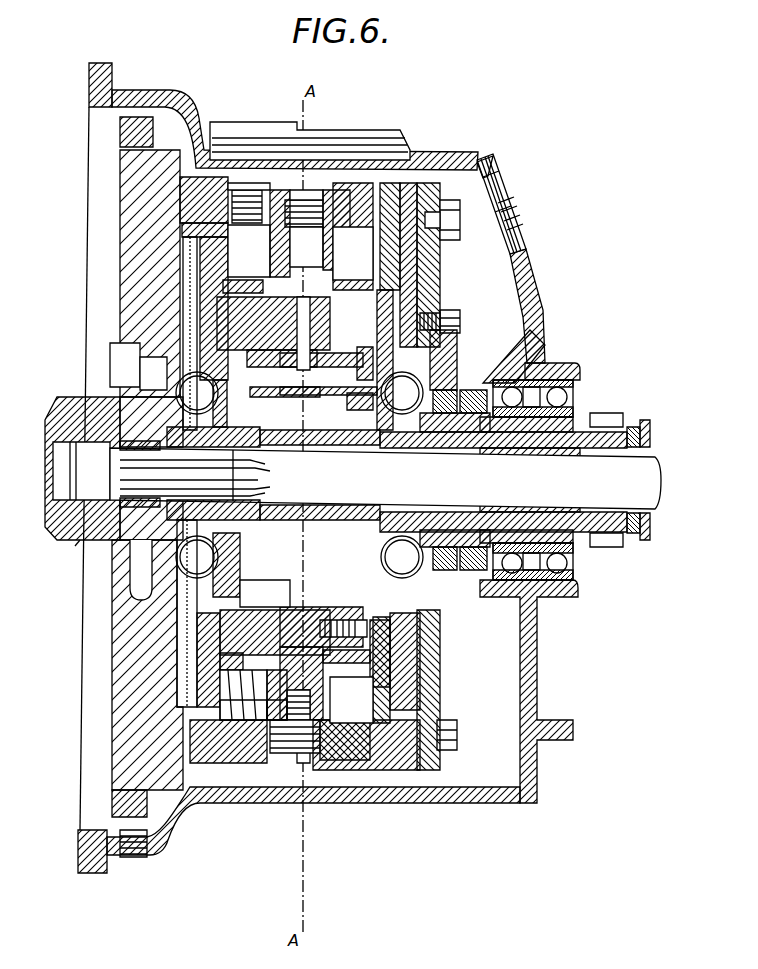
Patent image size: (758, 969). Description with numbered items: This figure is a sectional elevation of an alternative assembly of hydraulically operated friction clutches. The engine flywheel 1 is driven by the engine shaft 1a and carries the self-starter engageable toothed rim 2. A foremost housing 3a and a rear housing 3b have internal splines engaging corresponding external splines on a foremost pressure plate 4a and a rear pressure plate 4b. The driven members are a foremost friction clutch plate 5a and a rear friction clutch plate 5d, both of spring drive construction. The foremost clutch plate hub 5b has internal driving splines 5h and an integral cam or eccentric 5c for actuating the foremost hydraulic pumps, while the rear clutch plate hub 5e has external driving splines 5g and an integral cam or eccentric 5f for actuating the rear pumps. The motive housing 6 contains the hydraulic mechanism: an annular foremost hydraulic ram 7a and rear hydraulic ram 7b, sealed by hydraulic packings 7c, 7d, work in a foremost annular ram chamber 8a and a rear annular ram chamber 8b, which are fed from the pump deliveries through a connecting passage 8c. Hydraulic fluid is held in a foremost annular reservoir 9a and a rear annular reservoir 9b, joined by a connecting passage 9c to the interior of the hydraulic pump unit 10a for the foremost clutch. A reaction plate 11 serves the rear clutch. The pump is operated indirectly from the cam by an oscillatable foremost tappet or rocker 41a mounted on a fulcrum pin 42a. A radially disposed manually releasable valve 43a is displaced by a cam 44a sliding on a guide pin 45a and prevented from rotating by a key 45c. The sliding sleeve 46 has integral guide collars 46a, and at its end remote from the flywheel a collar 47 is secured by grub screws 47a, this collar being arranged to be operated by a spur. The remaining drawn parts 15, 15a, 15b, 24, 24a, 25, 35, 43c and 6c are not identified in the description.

The engine flywheel 1 is at (124, 781).
The engine shaft 1a is at (90, 407).
The self-starter engageable toothed rim 2 is at (128, 148).
The foremost housing 3a is at (140, 172).
The rear housing 3b is at (396, 245).
The foremost pressure plate 4a is at (195, 207).
The rear pressure plate 4b is at (428, 203).
The foremost friction clutch plate 5a is at (187, 217).
The foremost clutch plate hub 5b is at (200, 385).
The cam or eccentric 5c is at (180, 560).
The rear friction clutch plate 5d is at (407, 629).
The rear clutch plate hub 5e is at (547, 357).
The cam or eccentric 5f is at (347, 515).
The external driving splines 5g is at (471, 378).
The internal driving splines 5h is at (127, 362).
The motive housing 6 is at (333, 160).
The screw 6c is at (503, 201).
The foremost hydraulic ram 7a is at (207, 185).
The rear hydraulic ram 7b is at (372, 268).
The hydraulic packing 7c is at (258, 240).
The hydraulic packing 7d is at (335, 282).
The foremost annular ram chamber 8a is at (275, 250).
The rear annular ram chamber 8b is at (340, 227).
The connecting passage 8c is at (237, 778).
The foremost annular reservoir 9a is at (262, 287).
The rear annular reservoir 9b is at (390, 270).
The connecting passage 9c is at (273, 764).
The hydraulic pump unit 10a is at (307, 764).
The reaction plate 11 is at (492, 176).
The bearing retainer 15 is at (543, 350).
The retainer arm 15a is at (531, 322).
The retainer collar 15b is at (603, 412).
The input shaft 24 is at (474, 497).
The splined shaft end 24a is at (123, 453).
The hub ring 25 is at (78, 547).
The ring gear flange 35 is at (131, 91).
The foremost tappet or rocker 41a is at (244, 593).
The fulcrum pin 42a is at (222, 545).
The manually releasable valve 43a is at (300, 196).
The bolt 43c is at (447, 233).
The cam 44a is at (186, 275).
The guide pin 45a is at (192, 312).
The key 45c is at (199, 300).
The sliding sleeve 46 is at (190, 372).
The guide collar 46a is at (187, 330).
The collar 47 is at (646, 538).
The grub screw 47a is at (638, 530).